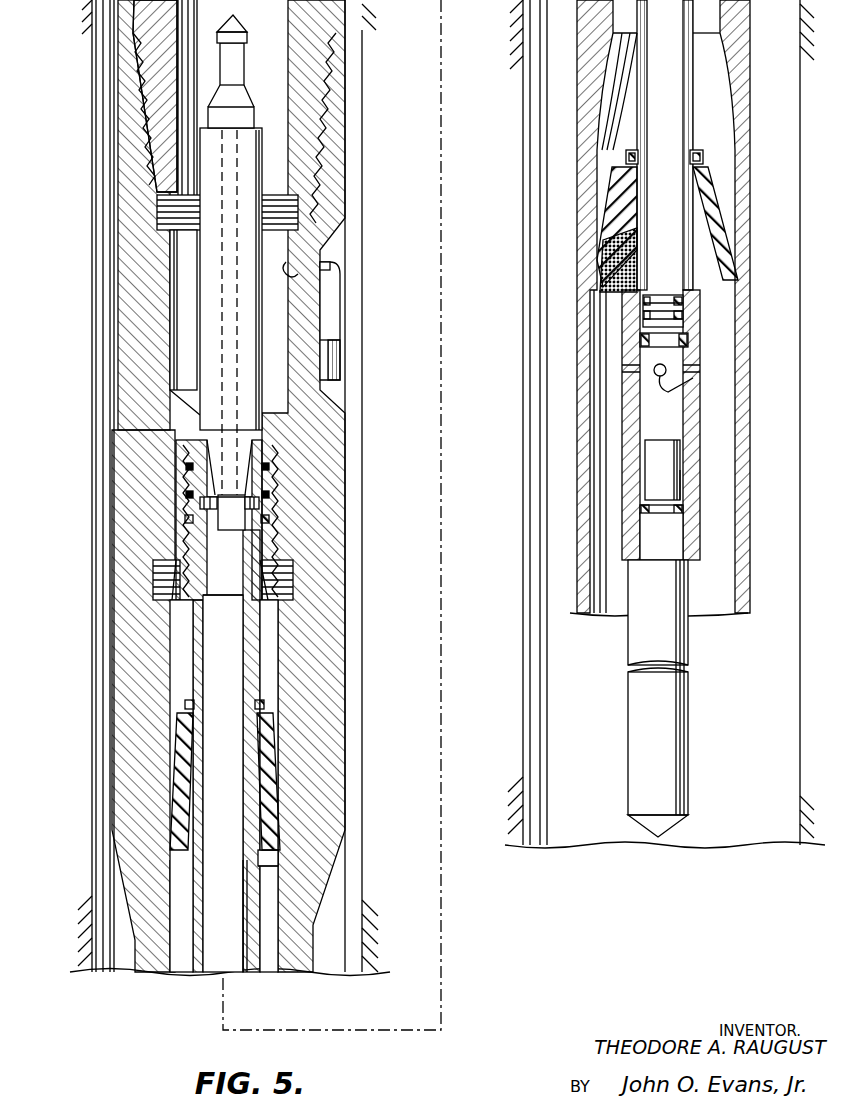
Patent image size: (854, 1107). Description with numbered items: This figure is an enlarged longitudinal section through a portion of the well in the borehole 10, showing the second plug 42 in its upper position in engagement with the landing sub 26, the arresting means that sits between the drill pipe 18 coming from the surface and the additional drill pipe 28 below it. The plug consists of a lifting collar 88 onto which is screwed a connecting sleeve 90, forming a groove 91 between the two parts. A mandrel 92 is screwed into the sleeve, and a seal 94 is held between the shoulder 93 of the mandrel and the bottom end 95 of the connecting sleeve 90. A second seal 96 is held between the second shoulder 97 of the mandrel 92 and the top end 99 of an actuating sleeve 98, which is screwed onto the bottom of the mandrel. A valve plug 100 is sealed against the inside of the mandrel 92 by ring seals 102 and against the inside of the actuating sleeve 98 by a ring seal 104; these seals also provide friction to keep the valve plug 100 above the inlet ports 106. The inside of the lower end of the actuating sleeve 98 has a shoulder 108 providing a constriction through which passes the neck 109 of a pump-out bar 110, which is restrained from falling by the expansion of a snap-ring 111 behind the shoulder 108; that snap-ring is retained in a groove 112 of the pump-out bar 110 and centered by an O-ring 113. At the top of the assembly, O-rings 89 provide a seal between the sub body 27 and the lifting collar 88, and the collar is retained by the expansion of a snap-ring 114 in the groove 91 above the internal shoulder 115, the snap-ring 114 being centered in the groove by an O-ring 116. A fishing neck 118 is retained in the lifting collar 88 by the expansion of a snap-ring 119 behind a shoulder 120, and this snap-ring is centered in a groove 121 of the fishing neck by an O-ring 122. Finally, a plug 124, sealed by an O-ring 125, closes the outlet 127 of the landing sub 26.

The borehole 10 is at (362, 38).
The drill pipe 18 is at (348, 13).
The landing sub 26 is at (345, 240).
The sub body 27 is at (128, 248).
The drill pipe 28 is at (310, 928).
The second plug 42 is at (270, 910).
The lifting collar 88 is at (266, 460).
The O-rings 89 is at (269, 495).
The connecting sleeve 90 is at (267, 652).
The groove 91 is at (250, 510).
The mandrel 92 is at (245, 951).
The shoulder 93 is at (258, 860).
The seal 94 is at (275, 787).
The bottom end 95 is at (262, 700).
The second seal 96 is at (722, 200).
The second shoulder 97 is at (703, 143).
The actuating sleeve 98 is at (700, 407).
The top end 99 is at (730, 276).
The valve plug 100 is at (643, 312).
The ring seals 102 is at (692, 320).
The ring seal 104 is at (690, 339).
The inlet ports 106 is at (672, 390).
The shoulder 108 is at (681, 548).
The neck 109 is at (673, 456).
The pump-out bar 110 is at (690, 749).
The snap-ring 111 is at (683, 508).
The groove 112 is at (682, 492).
The O-ring 113 is at (681, 531).
The snap-ring 114 is at (269, 521).
The internal shoulder 115 is at (273, 582).
The O-ring 116 is at (273, 547).
The fishing neck 118 is at (212, 303).
The snap-ring 119 is at (210, 497).
The shoulder 120 is at (190, 467).
The groove 121 is at (187, 521).
The O-ring 122 is at (215, 511).
The plug 124 is at (334, 316).
The O-ring 125 is at (320, 376).
The outlet 127 is at (298, 268).